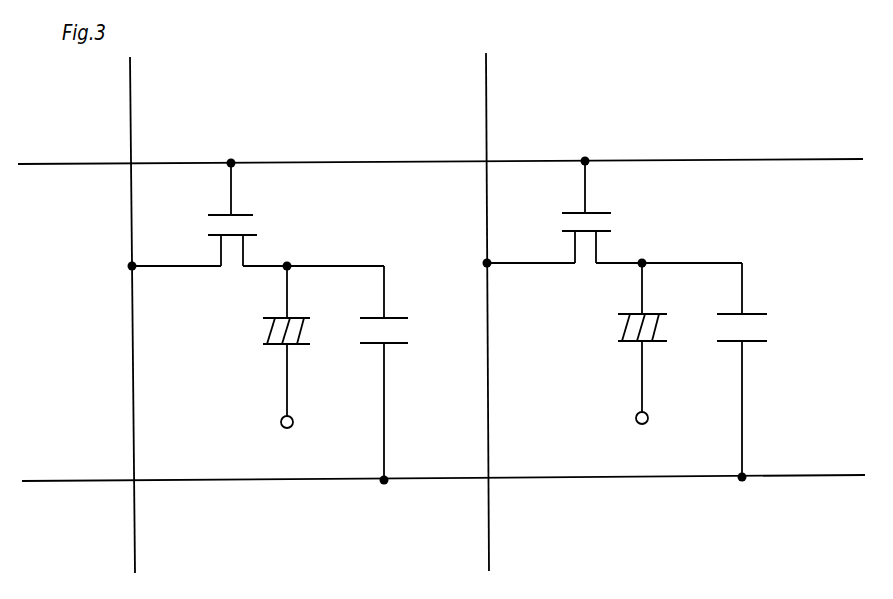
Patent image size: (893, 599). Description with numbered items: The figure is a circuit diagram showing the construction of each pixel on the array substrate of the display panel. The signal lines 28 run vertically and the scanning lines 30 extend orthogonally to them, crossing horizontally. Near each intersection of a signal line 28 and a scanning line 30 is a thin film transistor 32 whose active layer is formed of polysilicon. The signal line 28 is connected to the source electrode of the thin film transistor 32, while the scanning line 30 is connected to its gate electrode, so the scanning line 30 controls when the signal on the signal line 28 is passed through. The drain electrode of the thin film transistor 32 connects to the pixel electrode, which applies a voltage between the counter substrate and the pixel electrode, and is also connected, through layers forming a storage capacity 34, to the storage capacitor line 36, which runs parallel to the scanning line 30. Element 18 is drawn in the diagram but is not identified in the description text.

The light emitting element 18 is at (266, 330).
The signal line 28 is at (132, 109).
The scanning line 30 is at (57, 163).
The thin film transistor 32 is at (245, 213).
The storage capacity 34 is at (402, 332).
The storage capacitor line 36 is at (82, 480).